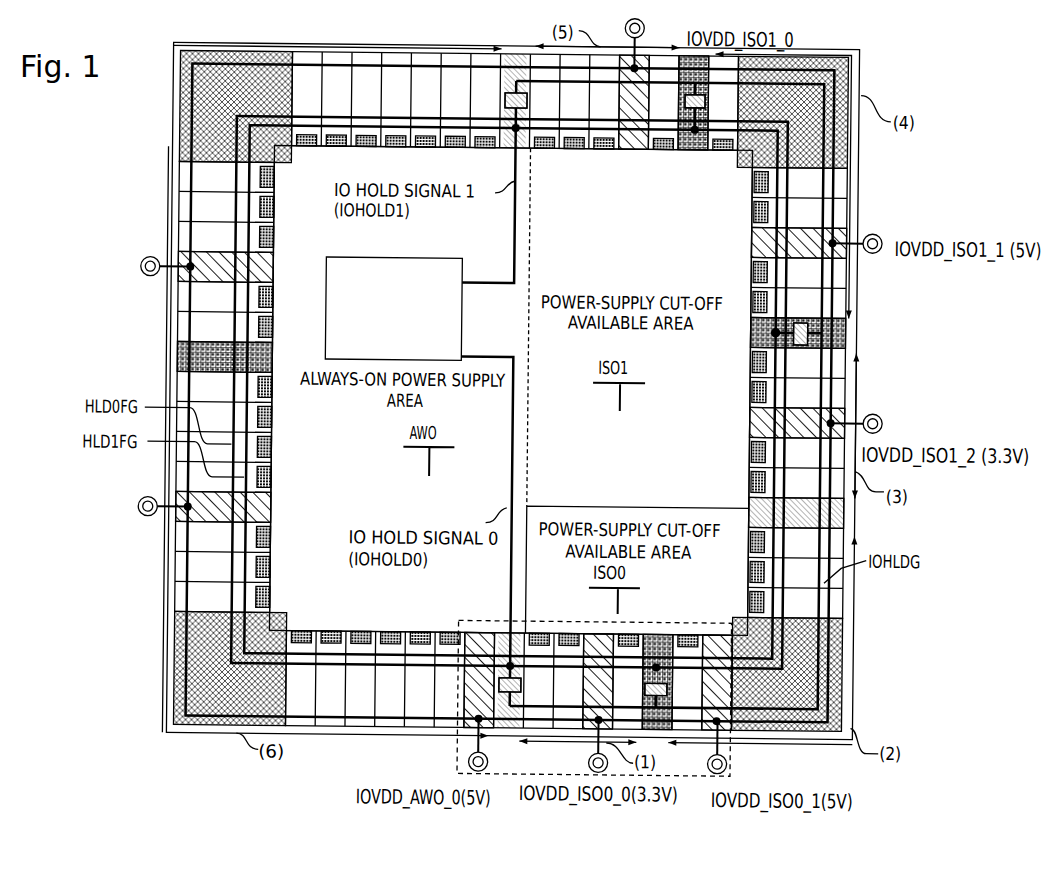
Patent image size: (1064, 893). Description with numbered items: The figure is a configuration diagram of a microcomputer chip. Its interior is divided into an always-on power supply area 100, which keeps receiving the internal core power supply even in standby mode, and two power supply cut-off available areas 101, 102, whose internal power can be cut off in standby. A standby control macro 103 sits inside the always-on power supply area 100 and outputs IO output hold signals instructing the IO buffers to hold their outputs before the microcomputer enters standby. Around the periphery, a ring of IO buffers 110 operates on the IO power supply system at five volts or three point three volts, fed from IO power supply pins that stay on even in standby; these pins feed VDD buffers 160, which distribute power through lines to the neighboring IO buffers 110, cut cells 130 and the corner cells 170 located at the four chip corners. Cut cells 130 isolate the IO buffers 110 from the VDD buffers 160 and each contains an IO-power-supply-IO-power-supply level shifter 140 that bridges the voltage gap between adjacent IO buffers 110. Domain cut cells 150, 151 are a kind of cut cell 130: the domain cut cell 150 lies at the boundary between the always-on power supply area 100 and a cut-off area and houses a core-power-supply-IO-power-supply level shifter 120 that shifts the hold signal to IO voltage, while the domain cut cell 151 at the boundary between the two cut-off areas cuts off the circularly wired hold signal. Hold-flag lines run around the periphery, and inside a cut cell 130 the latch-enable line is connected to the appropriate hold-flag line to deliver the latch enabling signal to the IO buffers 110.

The always-on power supply area 100 is at (290, 595).
The power supply cut-off available area 101 is at (727, 597).
The power supply cut-off available area 102 is at (730, 388).
The standby control macro 103 is at (463, 325).
The IO buffer 110 is at (842, 183).
The core-power-supply-IO-power-supply level shifter 120 is at (750, 478).
The cut cell 130 is at (838, 335).
The IO-power-supply-IO-power-supply level shifter 140 is at (770, 333).
The domain cut cell 150 is at (512, 55).
The domain cut cell 151 is at (750, 503).
The VDD buffer 160 is at (847, 233).
The corner cell 170 is at (833, 660).